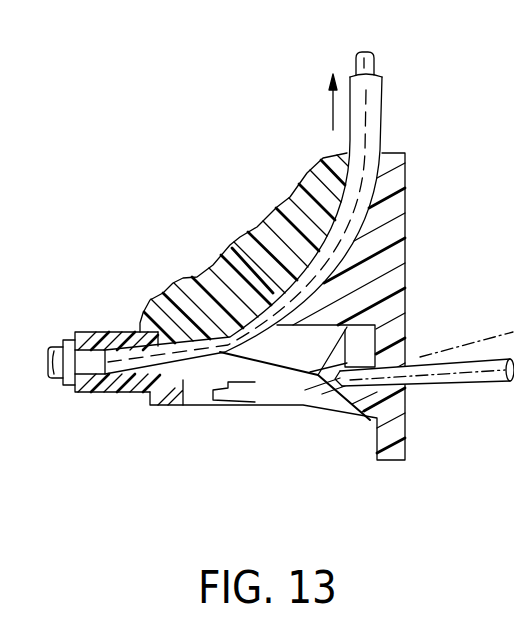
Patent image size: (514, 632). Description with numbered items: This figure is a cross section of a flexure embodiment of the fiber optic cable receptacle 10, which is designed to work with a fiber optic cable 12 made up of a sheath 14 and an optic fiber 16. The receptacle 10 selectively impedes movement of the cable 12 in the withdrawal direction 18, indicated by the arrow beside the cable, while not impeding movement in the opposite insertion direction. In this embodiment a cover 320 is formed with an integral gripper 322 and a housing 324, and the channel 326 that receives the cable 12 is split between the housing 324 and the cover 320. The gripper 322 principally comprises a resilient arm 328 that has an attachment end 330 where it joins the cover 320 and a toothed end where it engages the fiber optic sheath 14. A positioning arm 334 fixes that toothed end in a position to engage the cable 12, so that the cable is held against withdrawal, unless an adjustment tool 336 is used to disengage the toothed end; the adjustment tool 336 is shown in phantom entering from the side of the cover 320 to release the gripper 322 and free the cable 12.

The fiber optic cable receptacle 10 is at (265, 443).
The fiber optic cable 12 is at (385, 112).
The sheath 14 is at (384, 76).
The optic fiber 16 is at (356, 68).
The withdrawal direction 18 is at (332, 110).
The cover 320 is at (405, 247).
The gripper 322 is at (183, 282).
The housing 324 is at (247, 234).
The channel 326 is at (161, 357).
The resilient arm 328 is at (255, 367).
The attachment end 330 is at (377, 420).
The positioning arm 334 is at (405, 325).
The adjustment tool 336 is at (497, 330).